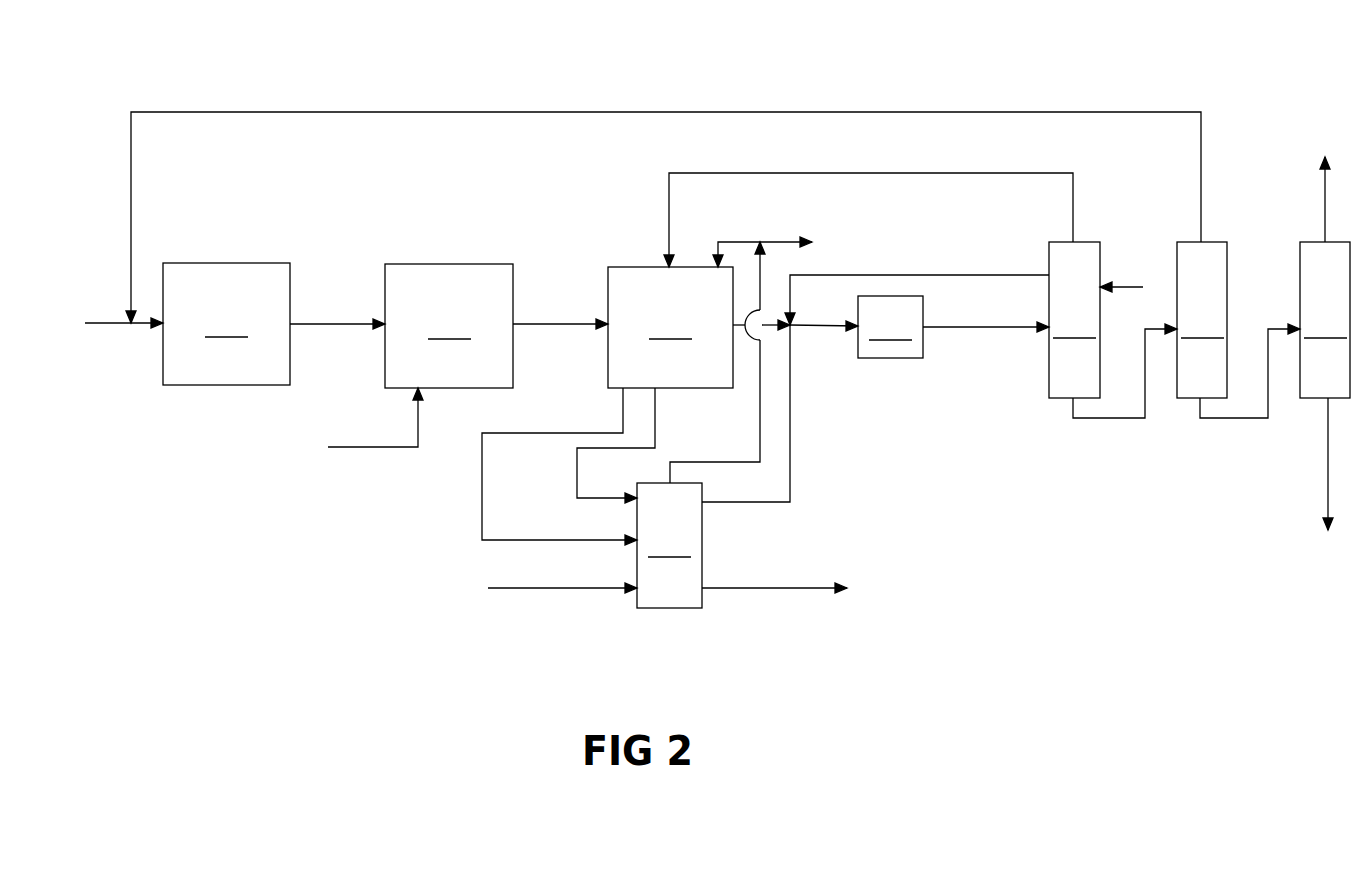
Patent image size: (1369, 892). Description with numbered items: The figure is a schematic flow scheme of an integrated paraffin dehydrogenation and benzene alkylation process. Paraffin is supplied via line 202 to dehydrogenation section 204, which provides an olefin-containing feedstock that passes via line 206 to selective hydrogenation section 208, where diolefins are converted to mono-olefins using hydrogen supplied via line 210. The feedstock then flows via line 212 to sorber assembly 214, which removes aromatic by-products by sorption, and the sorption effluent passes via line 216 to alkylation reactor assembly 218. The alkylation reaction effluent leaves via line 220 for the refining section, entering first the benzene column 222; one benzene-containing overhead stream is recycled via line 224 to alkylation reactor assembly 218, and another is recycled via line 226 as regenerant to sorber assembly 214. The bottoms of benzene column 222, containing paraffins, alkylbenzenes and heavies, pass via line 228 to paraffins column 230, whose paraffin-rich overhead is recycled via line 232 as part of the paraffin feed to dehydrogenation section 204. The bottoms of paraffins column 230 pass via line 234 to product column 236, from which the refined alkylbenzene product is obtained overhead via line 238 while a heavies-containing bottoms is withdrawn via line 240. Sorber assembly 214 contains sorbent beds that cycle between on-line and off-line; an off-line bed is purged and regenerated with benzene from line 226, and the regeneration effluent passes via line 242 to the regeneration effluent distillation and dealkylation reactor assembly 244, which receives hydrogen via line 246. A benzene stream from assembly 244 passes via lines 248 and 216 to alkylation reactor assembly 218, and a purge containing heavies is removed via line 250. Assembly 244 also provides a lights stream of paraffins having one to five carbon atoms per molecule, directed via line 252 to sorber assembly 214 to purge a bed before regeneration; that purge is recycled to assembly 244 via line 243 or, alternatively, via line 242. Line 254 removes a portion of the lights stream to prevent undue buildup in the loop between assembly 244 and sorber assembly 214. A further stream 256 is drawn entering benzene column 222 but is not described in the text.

The paraffin supply line 202 is at (115, 323).
The dehydrogenation section 204 is at (226, 324).
The olefin-containing feedstock line 206 is at (312, 322).
The selective hydrogenation section 208 is at (449, 326).
The hydrogen supply line 210 is at (387, 447).
The feedstock transfer line 212 is at (527, 322).
The sorber assembly 214 is at (670, 327).
The sorption effluent line 216 is at (815, 328).
The alkylation reactor assembly 218 is at (890, 327).
The alkylation reaction effluent line 220 is at (948, 328).
The benzene column 222 is at (1074, 320).
The benzene recycle line 224 is at (943, 275).
The regenerant benzene line 226 is at (900, 173).
The benzene column bottoms line 228 is at (1105, 418).
The paraffins column 230 is at (1202, 320).
The paraffin recycle line 232 is at (1133, 112).
The paraffins column bottoms line 234 is at (1233, 418).
The product column 236 is at (1325, 320).
The alkylbenzene product line 238 is at (1323, 220).
The heavies bottoms line 240 is at (1327, 443).
The regeneration effluent line 242 is at (478, 453).
The purge recycle line 243 is at (573, 480).
The regeneration effluent distillation and dealkylation reactor assembly 244 is at (669, 545).
The hydrogen supply line 246 is at (538, 588).
The benzene stream line 248 is at (793, 468).
The heavies purge line 250 is at (797, 588).
The lights stream line 252 is at (758, 438).
The lights removal line 254 is at (782, 240).
The input stream to column 222 256 is at (1115, 287).